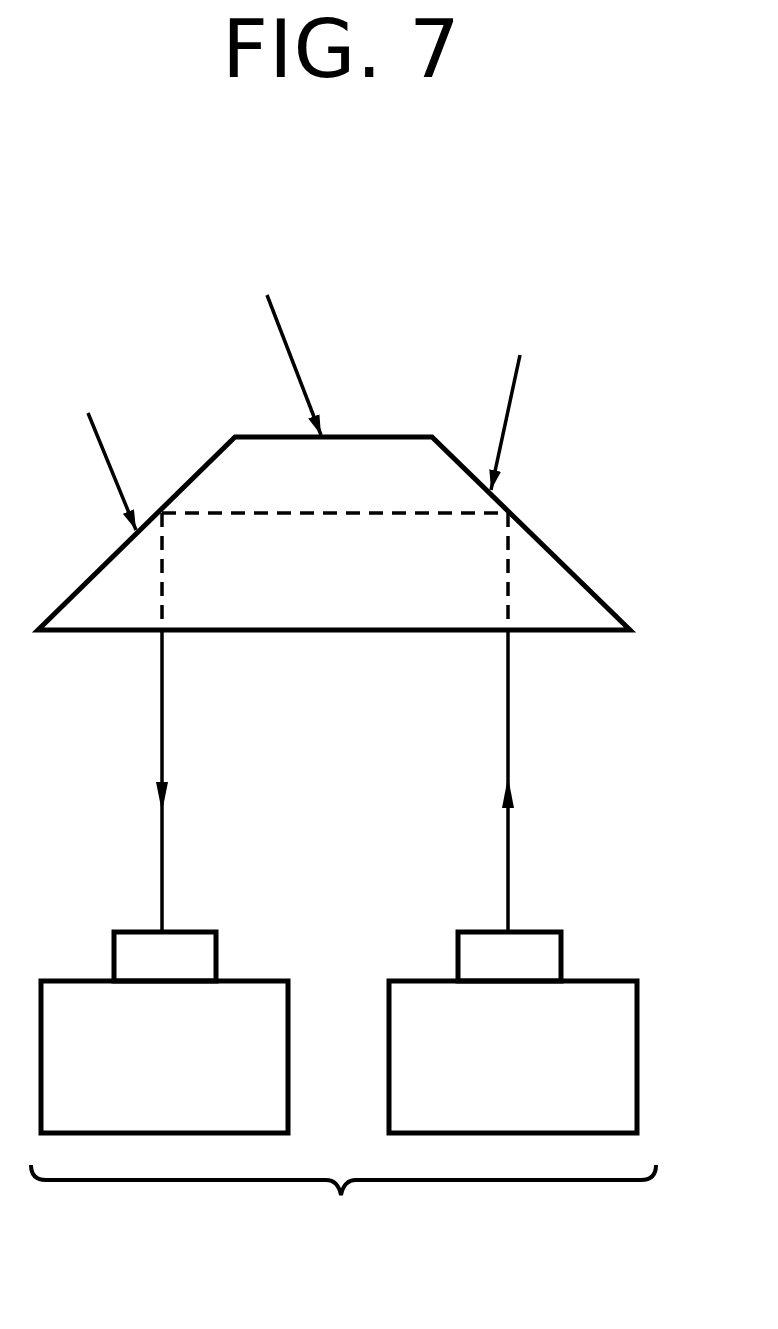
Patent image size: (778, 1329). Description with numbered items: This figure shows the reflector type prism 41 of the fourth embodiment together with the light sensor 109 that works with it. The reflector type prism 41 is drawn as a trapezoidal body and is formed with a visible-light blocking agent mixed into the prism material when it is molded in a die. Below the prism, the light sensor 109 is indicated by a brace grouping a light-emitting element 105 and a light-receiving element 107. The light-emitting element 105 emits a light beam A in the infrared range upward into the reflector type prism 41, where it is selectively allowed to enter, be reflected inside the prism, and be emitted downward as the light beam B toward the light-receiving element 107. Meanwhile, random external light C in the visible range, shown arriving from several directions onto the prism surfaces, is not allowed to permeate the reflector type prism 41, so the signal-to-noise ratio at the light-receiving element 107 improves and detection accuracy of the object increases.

The reflector type prism 41 is at (592, 633).
The light-emitting element 105 is at (474, 1080).
The light-receiving element 107 is at (199, 1080).
The light sensor 109 is at (343, 1218).
The light beam A is at (509, 850).
The light beam B is at (163, 722).
The random external light C is at (299, 381).